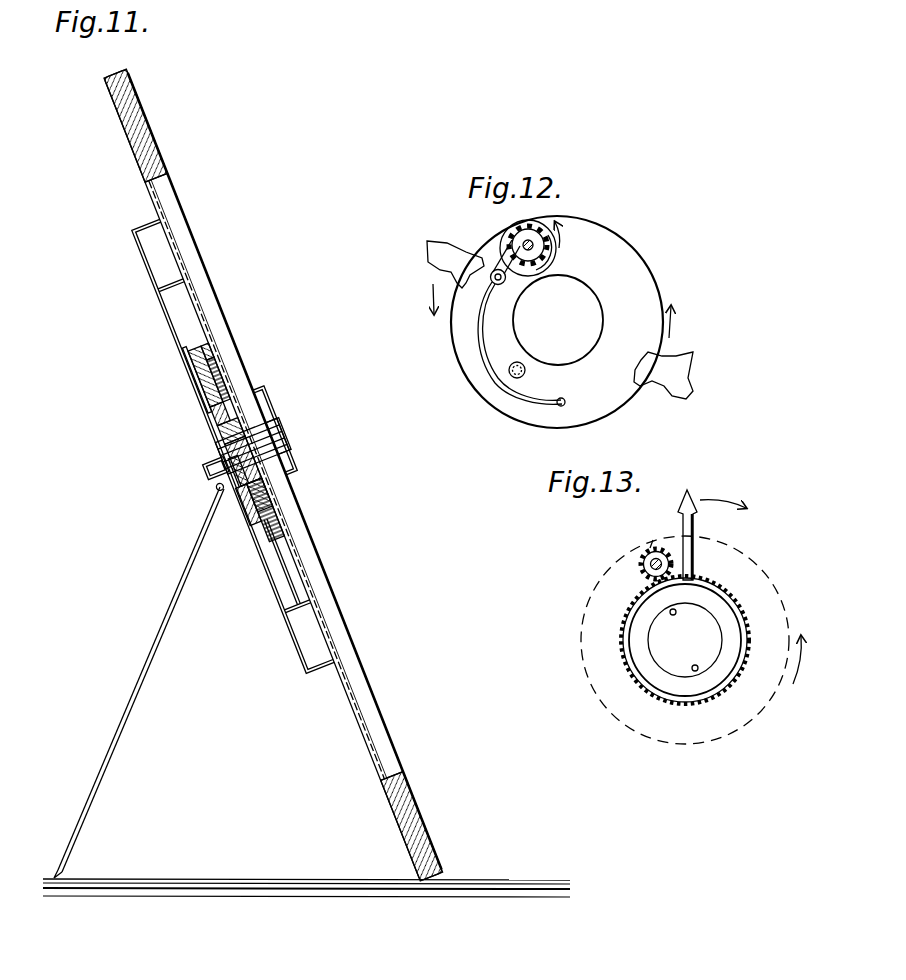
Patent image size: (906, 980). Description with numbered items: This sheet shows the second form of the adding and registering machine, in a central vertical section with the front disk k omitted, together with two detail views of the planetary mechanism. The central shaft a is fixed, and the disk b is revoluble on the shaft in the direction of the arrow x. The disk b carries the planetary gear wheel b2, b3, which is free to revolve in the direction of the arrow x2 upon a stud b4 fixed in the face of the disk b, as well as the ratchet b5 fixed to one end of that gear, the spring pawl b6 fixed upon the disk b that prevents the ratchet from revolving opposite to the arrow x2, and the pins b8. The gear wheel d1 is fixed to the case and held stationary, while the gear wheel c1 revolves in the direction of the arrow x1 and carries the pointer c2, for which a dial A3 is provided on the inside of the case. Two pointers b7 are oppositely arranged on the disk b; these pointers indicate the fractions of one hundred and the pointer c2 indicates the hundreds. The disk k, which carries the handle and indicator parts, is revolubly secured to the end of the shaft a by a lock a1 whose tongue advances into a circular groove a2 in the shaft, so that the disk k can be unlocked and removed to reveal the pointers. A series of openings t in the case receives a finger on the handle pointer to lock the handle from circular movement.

In FIG. 11, the dial A3 is at (138, 112).
In FIG. 11, the disk k is at (310, 556).
In FIG. 11, the openings t is at (172, 283).
In FIG. 11, the planetary gear wheel b3 is at (194, 352).
In FIG. 11, the pointer c2 is at (194, 318).
In FIG. 13, the pointer c2 is at (696, 528).
In FIG. 11, the ratchet b5 is at (205, 345).
In FIG. 12, the ratchet b5 is at (548, 268).
In FIG. 11, the pins b8 is at (213, 375).
In FIG. 11, the planetary gear wheel b2 is at (196, 366).
In FIG. 12, the planetary gear wheel b2 is at (539, 228).
In FIG. 13, the planetary gear wheel b2 is at (653, 545).
In FIG. 11, the stud b4 is at (202, 385).
In FIG. 12, the stud b4 is at (527, 244).
In FIG. 13, the stud b4 is at (650, 560).
In FIG. 11, the gear wheel c1 is at (206, 413).
In FIG. 13, the gear wheel c1 is at (713, 585).
In FIG. 11, the central shaft a is at (238, 453).
In FIG. 11, the lock a1 is at (266, 405).
In FIG. 11, the circular groove a2 is at (270, 432).
In FIG. 11, the disk b is at (280, 506).
In FIG. 12, the disk b is at (557, 322).
In FIG. 11, the gear wheel d1 is at (252, 516).
In FIG. 13, the gear wheel d1 is at (703, 696).
In FIG. 12, the spring pawl b6 is at (490, 284).
In FIG. 12, the pointer b7 is at (480, 268).
In FIG. 12, the arrow x is at (547, 311).
In FIG. 13, the arrow x is at (804, 660).
In FIG. 13, the arrow x1 is at (722, 490).
In FIG. 12, the arrow x2 is at (570, 230).